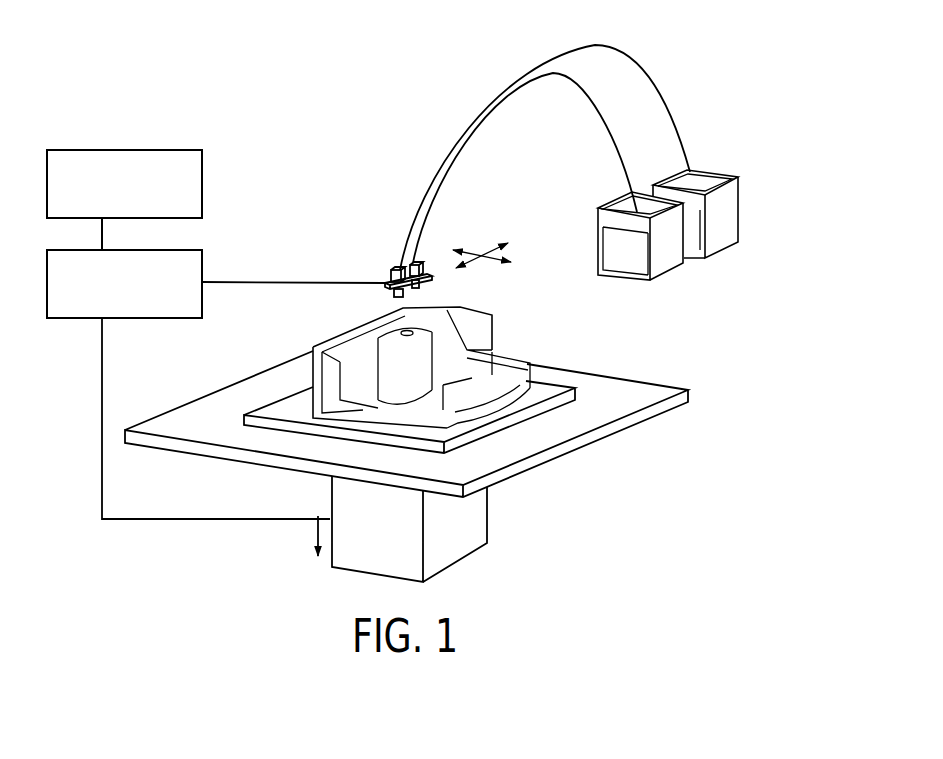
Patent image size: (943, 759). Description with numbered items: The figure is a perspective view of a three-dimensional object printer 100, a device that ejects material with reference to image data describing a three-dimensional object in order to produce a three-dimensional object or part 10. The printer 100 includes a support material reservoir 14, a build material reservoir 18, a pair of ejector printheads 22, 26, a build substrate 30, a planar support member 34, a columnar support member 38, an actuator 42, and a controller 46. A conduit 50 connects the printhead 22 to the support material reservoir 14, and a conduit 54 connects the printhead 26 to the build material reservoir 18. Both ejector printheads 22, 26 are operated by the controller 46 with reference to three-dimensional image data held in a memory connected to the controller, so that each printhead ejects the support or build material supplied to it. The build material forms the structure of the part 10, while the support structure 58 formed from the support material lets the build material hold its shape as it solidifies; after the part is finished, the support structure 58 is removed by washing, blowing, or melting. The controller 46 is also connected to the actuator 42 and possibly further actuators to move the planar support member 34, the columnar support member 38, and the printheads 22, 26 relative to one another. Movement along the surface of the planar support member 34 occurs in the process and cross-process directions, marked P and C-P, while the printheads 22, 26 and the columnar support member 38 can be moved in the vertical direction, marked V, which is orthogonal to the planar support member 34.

The printer 100 is at (342, 122).
The three-dimensional object or part 10 is at (483, 374).
The support material reservoir 14 is at (667, 250).
The build material reservoir 18 is at (713, 241).
The ejector printhead 22 is at (370, 297).
The ejector printhead 26 is at (435, 289).
The build substrate 30 is at (495, 419).
The planar support member 34 is at (540, 470).
The columnar support member 38 is at (478, 545).
The actuator 42 is at (203, 258).
The controller 46 is at (203, 182).
The conduit 50 is at (617, 140).
The conduit 54 is at (648, 92).
The support structure 58 is at (490, 350).